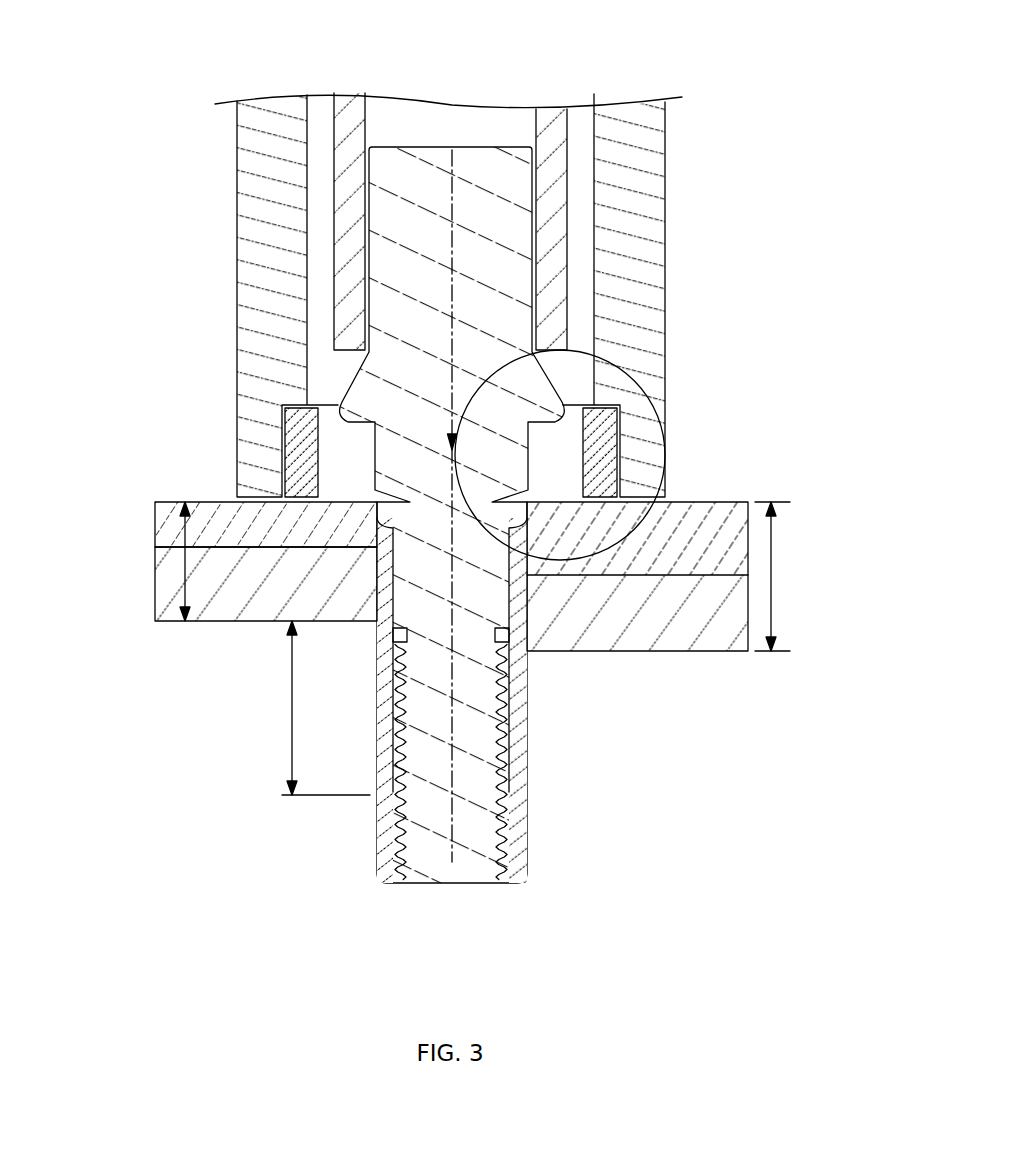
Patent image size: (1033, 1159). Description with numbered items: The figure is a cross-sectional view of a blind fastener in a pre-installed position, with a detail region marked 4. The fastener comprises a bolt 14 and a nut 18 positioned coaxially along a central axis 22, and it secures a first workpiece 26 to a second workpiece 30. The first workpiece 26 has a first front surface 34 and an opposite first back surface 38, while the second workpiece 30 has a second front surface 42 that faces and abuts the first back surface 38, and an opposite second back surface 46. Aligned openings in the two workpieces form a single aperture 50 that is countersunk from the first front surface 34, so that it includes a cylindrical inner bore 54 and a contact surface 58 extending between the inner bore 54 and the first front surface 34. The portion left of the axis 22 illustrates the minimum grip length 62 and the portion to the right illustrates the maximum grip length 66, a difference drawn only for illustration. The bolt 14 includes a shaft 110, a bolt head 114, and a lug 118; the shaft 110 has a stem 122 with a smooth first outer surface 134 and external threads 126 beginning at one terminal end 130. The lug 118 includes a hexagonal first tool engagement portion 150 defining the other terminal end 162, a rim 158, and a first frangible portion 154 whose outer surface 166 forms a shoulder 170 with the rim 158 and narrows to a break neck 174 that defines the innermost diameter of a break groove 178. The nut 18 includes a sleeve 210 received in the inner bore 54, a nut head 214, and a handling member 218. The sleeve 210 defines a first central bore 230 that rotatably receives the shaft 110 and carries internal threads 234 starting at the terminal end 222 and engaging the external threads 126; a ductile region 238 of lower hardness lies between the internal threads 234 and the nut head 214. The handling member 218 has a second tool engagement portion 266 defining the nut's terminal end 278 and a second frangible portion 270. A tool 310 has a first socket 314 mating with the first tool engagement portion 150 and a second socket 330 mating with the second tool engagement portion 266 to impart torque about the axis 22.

The detail circle 4 is at (512, 556).
The bolt 14 is at (529, 148).
The nut 18 is at (515, 865).
The central axis 22 is at (449, 219).
The first workpiece 26 is at (168, 527).
The second workpiece 30 is at (163, 583).
The first front surface 34 is at (178, 503).
The first back surface 38 is at (164, 548).
The second front surface 42 is at (173, 544).
The second back surface 46 is at (170, 622).
The aperture 50 is at (386, 640).
The inner bore 54 is at (380, 585).
The contact surface 58 is at (313, 505).
The minimum grip length 62 is at (196, 590).
The maximum grip length 66 is at (771, 616).
The shaft 110 is at (460, 873).
The bolt head 114 is at (600, 498).
The lug 118 is at (505, 237).
The stem 122 is at (480, 598).
The external threads 126 is at (507, 740).
The terminal end 130 is at (423, 883).
The first outer surface 134 is at (510, 582).
The first tool engagement portion 150 is at (536, 185).
The first frangible portion 154 is at (420, 437).
The rim 158 is at (530, 357).
The terminal end 162 is at (484, 145).
The outer surface 166 is at (530, 432).
The shoulder 170 is at (546, 395).
The break neck 174 is at (492, 500).
The break groove 178 is at (503, 494).
The sleeve 210 is at (527, 697).
The nut head 214 is at (560, 488).
The handling member 218 is at (598, 438).
The terminal end 222 is at (512, 883).
The first central bore 230 is at (507, 778).
The internal threads 234 is at (507, 822).
The ductile region 238 is at (292, 770).
The second tool engagement portion 266 is at (285, 415).
The second frangible portion 270 is at (377, 547).
The terminal end 278 is at (602, 405).
The tool 310 is at (222, 146).
The first socket 314 is at (315, 196).
The second socket 330 is at (258, 452).